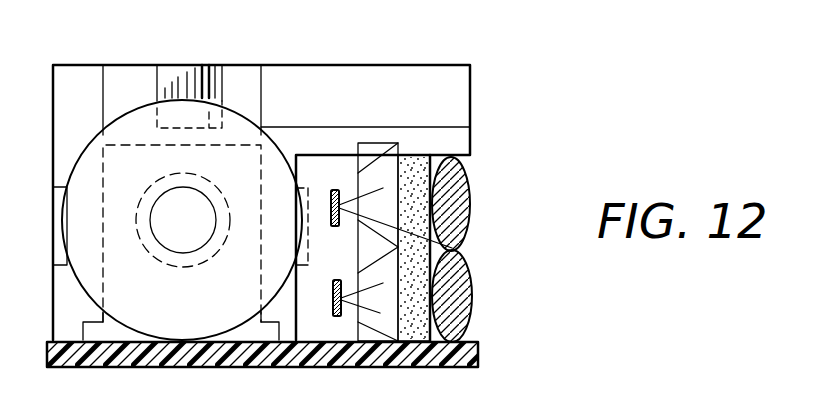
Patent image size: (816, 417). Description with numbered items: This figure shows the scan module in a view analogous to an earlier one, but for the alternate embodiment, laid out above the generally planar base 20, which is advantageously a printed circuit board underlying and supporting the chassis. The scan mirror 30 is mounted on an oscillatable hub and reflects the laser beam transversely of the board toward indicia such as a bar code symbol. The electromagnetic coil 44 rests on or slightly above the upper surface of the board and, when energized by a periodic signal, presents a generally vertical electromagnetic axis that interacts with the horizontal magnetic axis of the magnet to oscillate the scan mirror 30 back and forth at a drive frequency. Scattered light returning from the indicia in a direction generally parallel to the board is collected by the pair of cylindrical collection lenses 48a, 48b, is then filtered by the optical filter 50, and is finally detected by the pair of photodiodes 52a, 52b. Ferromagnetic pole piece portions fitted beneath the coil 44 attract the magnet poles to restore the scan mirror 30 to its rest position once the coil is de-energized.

The base 20 is at (48, 353).
The scan mirror 30 is at (198, 82).
The electromagnetic coil 44 is at (150, 300).
The cylindrical collection lens 48a is at (469, 180).
The cylindrical collection lens 48b is at (471, 300).
The optical filter 50 is at (413, 163).
The photodiode 52a is at (334, 189).
The photodiode 52b is at (338, 317).